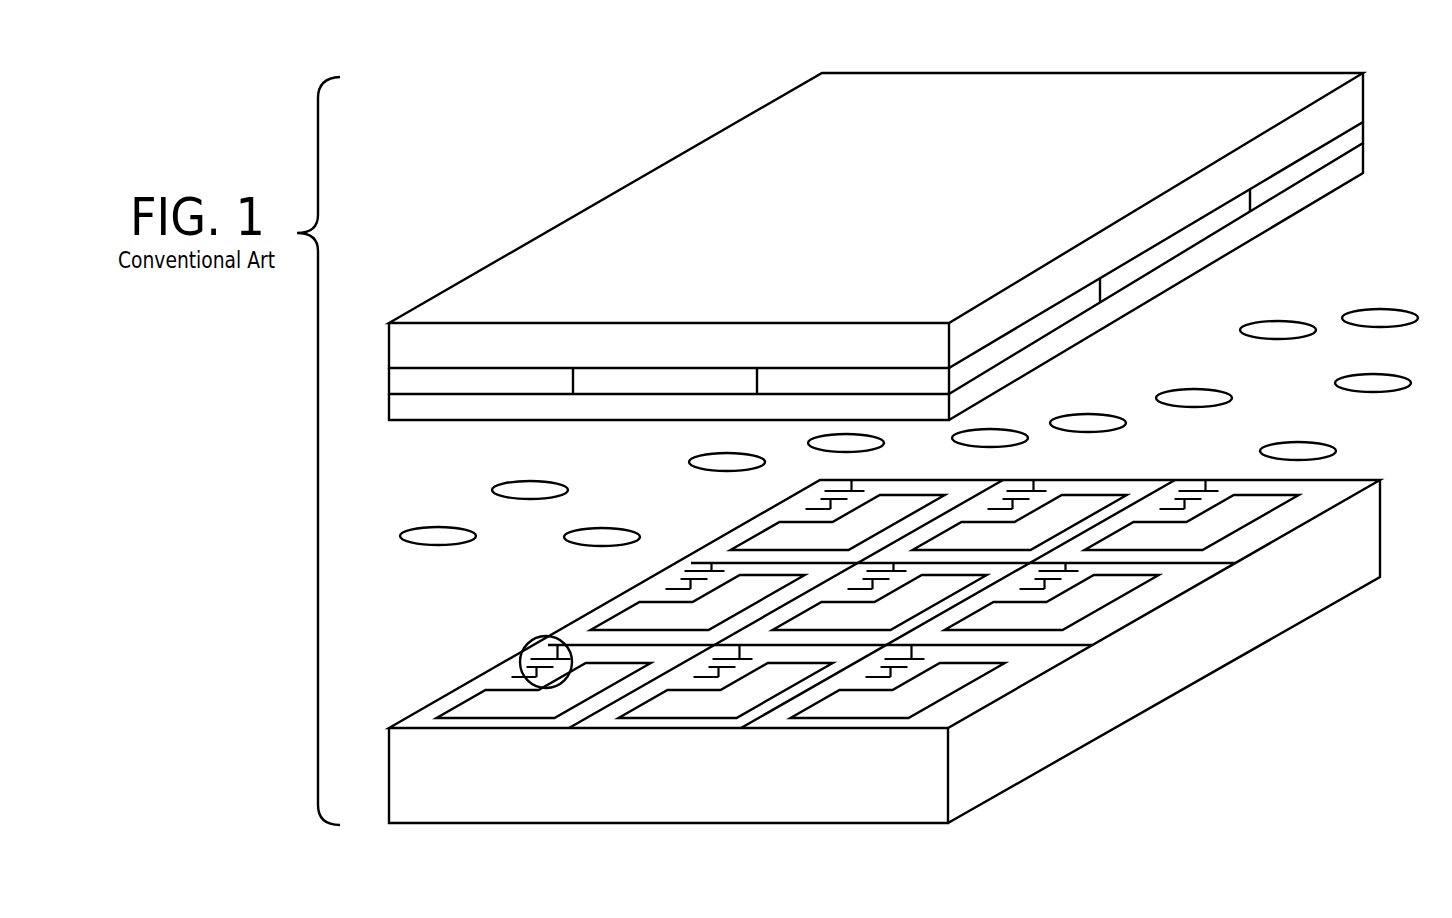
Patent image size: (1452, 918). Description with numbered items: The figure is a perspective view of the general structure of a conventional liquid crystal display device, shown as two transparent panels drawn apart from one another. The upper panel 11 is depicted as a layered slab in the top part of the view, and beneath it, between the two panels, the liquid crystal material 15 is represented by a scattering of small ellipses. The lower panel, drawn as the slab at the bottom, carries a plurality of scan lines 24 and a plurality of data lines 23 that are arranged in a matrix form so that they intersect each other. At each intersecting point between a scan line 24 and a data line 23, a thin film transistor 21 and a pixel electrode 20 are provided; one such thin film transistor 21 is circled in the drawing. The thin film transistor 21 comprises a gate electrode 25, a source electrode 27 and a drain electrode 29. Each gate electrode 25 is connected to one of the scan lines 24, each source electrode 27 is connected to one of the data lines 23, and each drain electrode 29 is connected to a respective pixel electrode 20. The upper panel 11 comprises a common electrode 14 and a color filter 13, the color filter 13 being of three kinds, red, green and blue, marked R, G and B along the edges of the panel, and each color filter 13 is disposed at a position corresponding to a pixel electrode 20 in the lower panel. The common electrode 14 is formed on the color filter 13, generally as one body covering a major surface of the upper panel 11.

The upper panel 11 is at (397, 343).
The color filter 13 is at (1362, 135).
The common electrode 14 is at (427, 413).
The liquid crystal material 15 is at (1400, 311).
The pixel electrode 20 is at (957, 683).
The thin film transistor 21 is at (527, 647).
The data line 23 is at (765, 715).
The scan line 24 is at (1063, 648).
The gate electrode 25 is at (1212, 484).
The source electrode 27 is at (643, 586).
The drain electrode 29 is at (1197, 508).